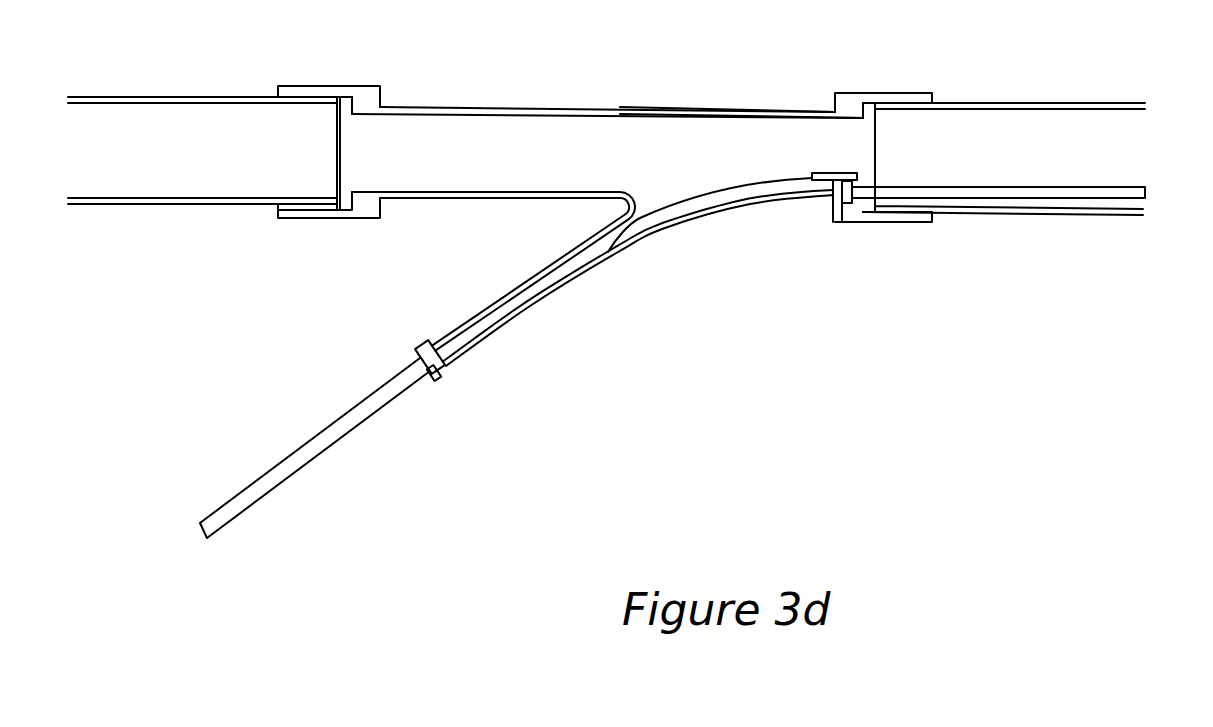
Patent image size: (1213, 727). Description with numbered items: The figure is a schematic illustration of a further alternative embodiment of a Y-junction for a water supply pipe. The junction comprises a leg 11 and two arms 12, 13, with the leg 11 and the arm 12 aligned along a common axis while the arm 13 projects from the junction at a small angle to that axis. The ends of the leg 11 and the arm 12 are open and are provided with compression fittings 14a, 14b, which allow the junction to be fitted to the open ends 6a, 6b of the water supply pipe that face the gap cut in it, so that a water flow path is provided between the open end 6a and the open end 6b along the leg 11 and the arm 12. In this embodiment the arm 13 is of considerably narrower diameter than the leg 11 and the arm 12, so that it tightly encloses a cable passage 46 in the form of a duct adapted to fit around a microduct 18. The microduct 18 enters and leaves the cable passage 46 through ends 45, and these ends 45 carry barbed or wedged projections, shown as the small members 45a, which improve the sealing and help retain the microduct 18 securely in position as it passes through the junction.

The open end 6a is at (307, 106).
The open end 6b is at (917, 110).
The leg 11 is at (777, 111).
The arm 12 is at (463, 106).
The arm 13 is at (513, 325).
The compression fitting 14a is at (302, 86).
The compression fitting 14b is at (905, 92).
The microduct 18 is at (383, 410).
The end 45 is at (417, 348).
The fitting member 45a is at (438, 374).
The cable passage 46 is at (610, 241).